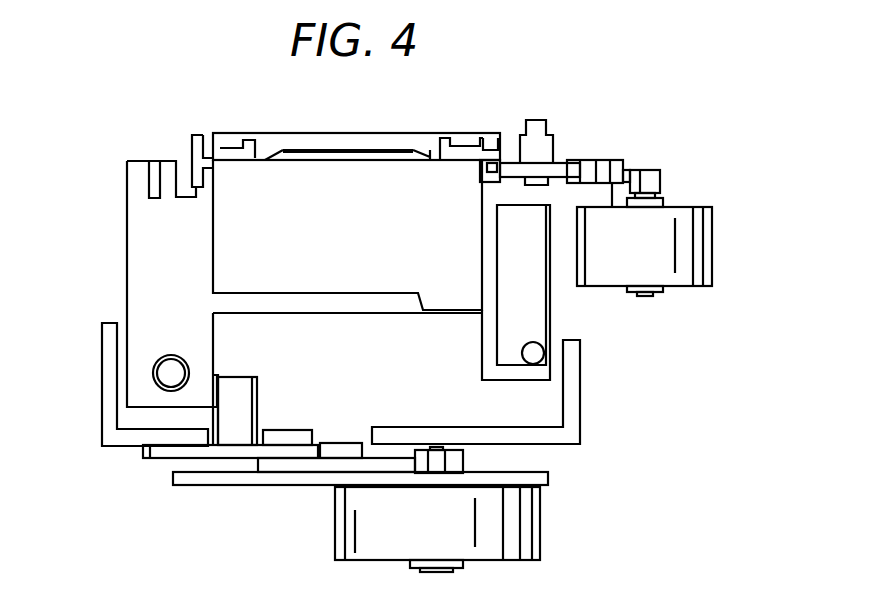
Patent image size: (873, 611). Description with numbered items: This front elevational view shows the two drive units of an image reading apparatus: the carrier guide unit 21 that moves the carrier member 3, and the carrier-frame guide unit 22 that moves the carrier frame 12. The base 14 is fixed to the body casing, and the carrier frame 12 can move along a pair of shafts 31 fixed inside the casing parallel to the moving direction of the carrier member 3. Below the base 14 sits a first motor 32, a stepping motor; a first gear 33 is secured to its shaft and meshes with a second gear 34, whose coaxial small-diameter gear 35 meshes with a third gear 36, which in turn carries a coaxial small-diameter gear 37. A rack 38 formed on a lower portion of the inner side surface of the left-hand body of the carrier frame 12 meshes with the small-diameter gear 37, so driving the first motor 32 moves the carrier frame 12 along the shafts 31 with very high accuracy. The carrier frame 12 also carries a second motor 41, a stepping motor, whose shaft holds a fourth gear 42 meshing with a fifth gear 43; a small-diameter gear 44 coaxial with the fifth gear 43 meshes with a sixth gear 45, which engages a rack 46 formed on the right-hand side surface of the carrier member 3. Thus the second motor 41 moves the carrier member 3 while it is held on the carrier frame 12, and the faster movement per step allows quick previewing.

The carrier member 3 is at (400, 133).
The carrier frame 12 is at (128, 256).
The base 14 is at (105, 425).
The carrier guide unit 21 is at (597, 176).
The carrier-frame guide unit 22 is at (341, 475).
The shafts 31 is at (172, 368).
The first motor 32 is at (540, 515).
The first gear 33 is at (463, 460).
The second gear 34 is at (262, 466).
The small-diameter gear 35 is at (338, 443).
The third gear 36 is at (143, 456).
The small-diameter gear 37 is at (253, 391).
The rack 38 is at (218, 375).
The second motor 41 is at (697, 253).
The fourth gear 42 is at (660, 180).
The fifth gear 43 is at (627, 172).
The small-diameter gear 44 is at (617, 162).
The sixth gear 45 is at (511, 163).
The rack 46 is at (480, 168).